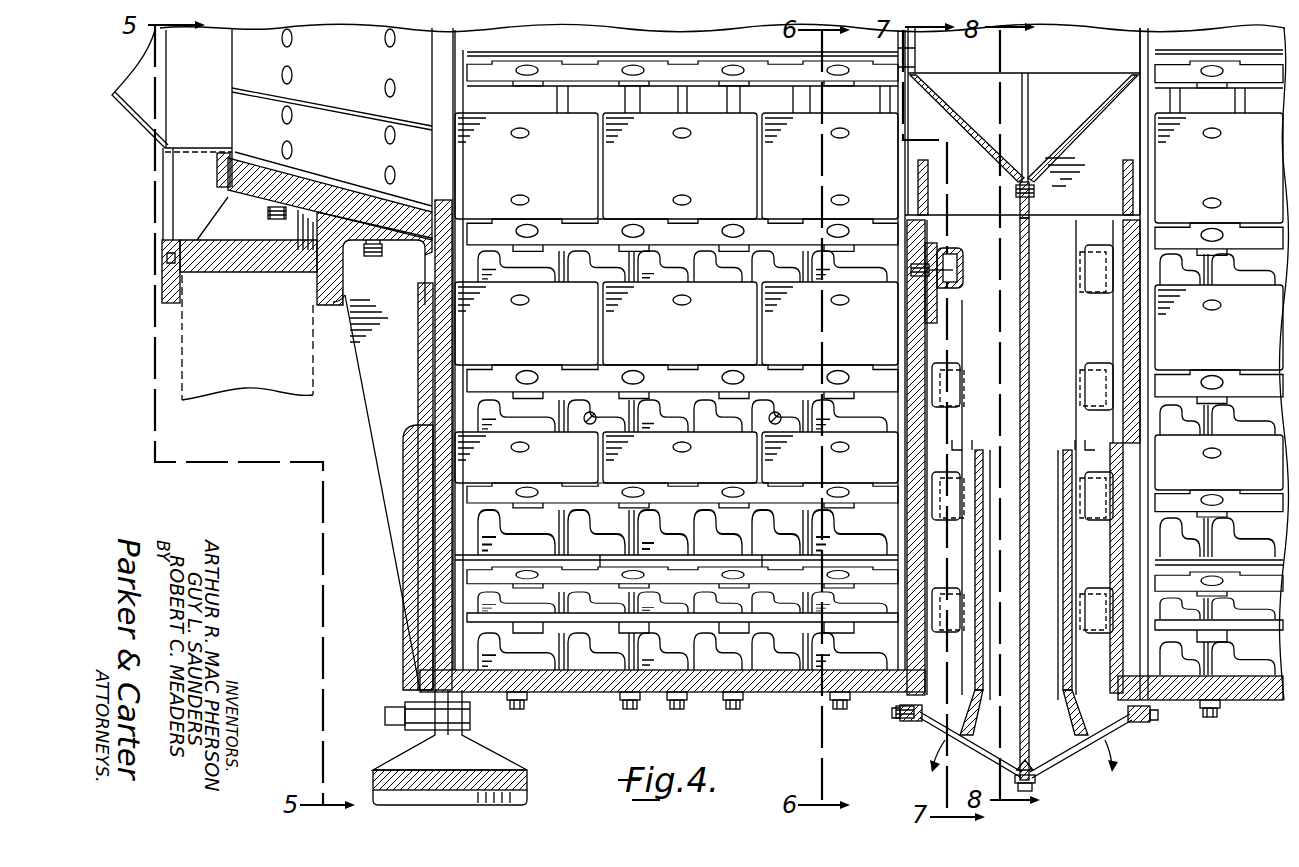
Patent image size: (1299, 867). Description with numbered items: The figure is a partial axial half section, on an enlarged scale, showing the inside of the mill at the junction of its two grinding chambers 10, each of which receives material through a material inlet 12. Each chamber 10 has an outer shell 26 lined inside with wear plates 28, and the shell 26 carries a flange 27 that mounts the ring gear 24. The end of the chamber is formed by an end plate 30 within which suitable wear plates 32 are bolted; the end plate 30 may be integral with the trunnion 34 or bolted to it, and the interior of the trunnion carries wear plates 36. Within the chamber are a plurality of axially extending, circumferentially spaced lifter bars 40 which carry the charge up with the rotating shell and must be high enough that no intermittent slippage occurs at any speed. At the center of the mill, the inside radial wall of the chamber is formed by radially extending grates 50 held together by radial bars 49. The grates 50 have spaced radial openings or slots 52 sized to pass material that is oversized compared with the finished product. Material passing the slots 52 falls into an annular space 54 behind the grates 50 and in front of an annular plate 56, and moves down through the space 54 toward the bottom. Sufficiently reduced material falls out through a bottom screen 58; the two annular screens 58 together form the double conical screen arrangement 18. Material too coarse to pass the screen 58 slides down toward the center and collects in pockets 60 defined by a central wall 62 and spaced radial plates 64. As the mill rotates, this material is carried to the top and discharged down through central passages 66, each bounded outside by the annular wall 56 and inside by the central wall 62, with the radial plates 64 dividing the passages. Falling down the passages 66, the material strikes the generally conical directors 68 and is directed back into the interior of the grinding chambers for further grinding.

The grinding chamber 10 is at (730, 419).
The material inlet 12 is at (145, 122).
The screen arrangement 18 is at (1045, 770).
The ring gear 24 is at (527, 795).
The outer shell 26 is at (705, 694).
The flange 27 is at (400, 697).
The wear plates 28 is at (770, 660).
The end plates 30 is at (405, 447).
The wear plates 32 is at (455, 472).
The trunnion 34 is at (348, 252).
The wear plates 36 is at (322, 186).
The lifter bars 40 is at (612, 86).
The radial bars 49 is at (892, 695).
The grates 50 is at (935, 497).
The openings or slots 52 is at (958, 528).
The annular space 54 is at (978, 452).
The annular plate 56 is at (1068, 530).
The bottom screen 58 is at (920, 725).
The pockets 60 is at (992, 742).
The central wall 62 is at (1030, 375).
The radial plates 64 is at (940, 770).
The central passages 66 is at (1078, 450).
The directors 68 is at (988, 152).